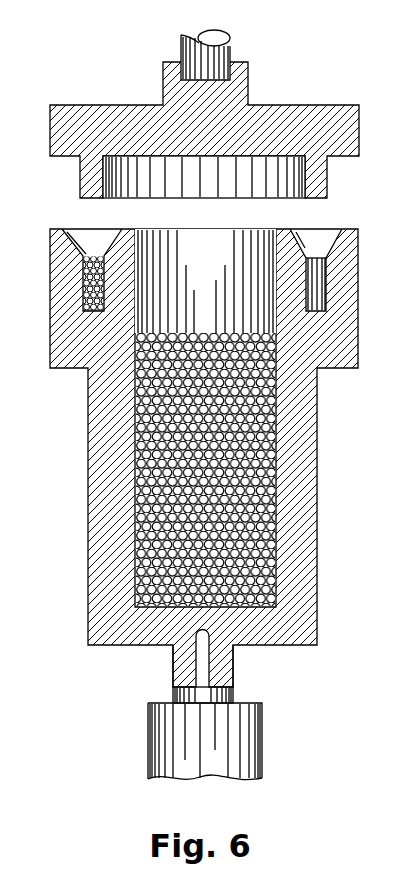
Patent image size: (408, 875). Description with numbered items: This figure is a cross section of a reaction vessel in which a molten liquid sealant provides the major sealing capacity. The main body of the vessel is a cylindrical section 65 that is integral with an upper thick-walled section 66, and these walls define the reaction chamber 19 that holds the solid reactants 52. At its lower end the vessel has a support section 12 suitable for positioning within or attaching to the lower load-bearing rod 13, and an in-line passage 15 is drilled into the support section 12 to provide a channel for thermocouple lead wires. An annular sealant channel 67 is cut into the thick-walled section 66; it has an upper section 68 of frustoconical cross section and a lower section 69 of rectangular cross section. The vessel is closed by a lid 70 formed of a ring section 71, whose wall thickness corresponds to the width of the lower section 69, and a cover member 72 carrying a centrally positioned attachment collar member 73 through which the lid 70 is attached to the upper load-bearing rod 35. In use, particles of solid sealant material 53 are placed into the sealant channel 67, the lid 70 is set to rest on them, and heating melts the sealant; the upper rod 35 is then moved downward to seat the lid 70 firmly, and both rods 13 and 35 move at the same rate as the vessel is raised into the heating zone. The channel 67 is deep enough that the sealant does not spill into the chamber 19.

The support section 12 is at (215, 695).
The lower load-bearing rod 13 is at (228, 740).
The passage 15 is at (203, 664).
The reaction chamber 19 is at (221, 261).
The upper load-bearing rod 35 is at (217, 60).
The solid reactants 52 is at (280, 412).
The solid sealant material 53 is at (88, 290).
The cylindrical section 65 is at (305, 540).
The upper thick-walled section 66 is at (332, 316).
The annular sealant channel 67 is at (329, 263).
The upper section 68 is at (325, 237).
The lower section 69 is at (320, 292).
The lid 70 is at (312, 104).
The ring section 71 is at (313, 190).
The cover member 72 is at (343, 120).
The attachment collar member 73 is at (232, 98).